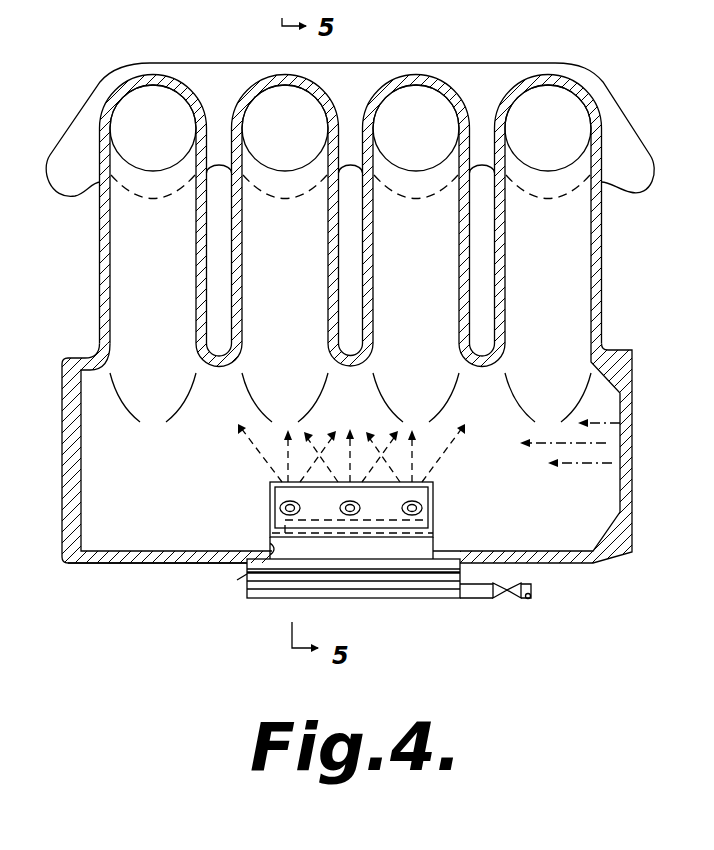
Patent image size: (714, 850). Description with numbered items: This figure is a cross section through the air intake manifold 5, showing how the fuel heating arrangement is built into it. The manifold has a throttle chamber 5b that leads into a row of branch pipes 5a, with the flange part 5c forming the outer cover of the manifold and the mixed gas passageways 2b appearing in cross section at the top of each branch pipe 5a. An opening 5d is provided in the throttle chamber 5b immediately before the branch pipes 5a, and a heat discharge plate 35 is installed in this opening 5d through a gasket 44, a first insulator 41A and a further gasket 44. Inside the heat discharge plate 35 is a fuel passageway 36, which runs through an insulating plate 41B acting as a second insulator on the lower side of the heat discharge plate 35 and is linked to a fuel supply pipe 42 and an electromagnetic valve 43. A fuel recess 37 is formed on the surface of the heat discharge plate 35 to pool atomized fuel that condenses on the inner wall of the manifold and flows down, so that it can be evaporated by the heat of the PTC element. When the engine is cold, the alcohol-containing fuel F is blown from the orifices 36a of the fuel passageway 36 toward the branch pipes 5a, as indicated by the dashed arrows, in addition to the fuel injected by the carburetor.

The mixed gas passageway 2b is at (141, 137).
The air intake manifold 5 is at (60, 414).
The branch pipe 5a is at (160, 249).
The throttle chamber 5b is at (130, 564).
The flange part 5c is at (104, 90).
The opening 5d is at (272, 547).
The heat discharge plate 35 is at (435, 548).
The fuel passageway 36 is at (296, 542).
The orifice of the fuel passageway 36a is at (280, 507).
The fuel recess 37 is at (377, 517).
The first insulator 41A is at (415, 581).
The insulating plate (second insulator) 41B is at (255, 598).
The fuel supply pipe 42 is at (476, 598).
The electromagnetic valve 43 is at (507, 598).
The gasket 44 is at (246, 579).
The atomized fuel F is at (256, 450).